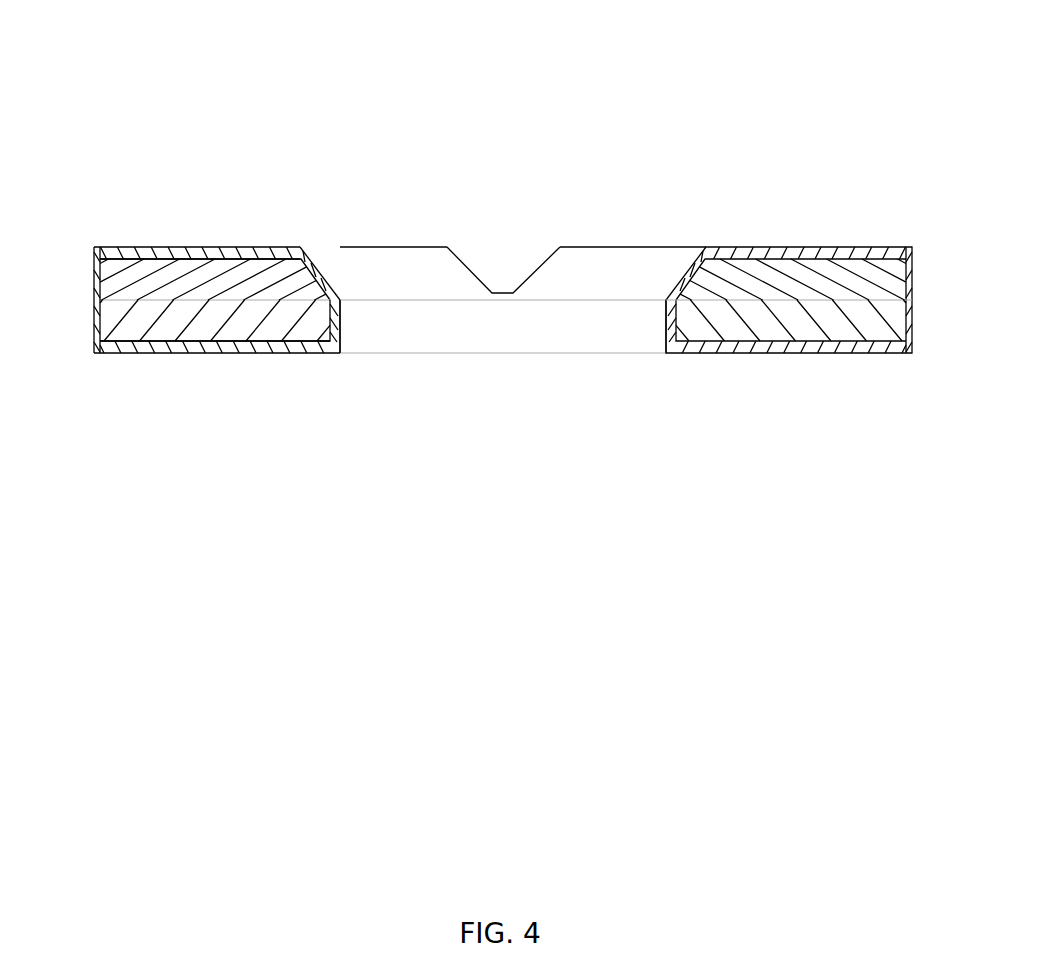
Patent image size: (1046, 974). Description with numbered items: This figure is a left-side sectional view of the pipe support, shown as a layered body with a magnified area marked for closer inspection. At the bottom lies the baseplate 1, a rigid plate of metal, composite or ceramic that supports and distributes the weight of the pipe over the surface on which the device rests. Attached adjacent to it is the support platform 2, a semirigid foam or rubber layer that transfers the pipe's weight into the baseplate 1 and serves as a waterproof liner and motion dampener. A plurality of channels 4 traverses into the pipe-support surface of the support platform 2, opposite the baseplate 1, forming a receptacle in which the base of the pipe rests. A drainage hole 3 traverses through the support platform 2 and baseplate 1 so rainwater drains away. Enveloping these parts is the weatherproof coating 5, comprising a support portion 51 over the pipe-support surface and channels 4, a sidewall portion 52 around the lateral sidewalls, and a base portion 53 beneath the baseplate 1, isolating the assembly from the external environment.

The baseplate 1 is at (92, 302).
The support platform 2 is at (92, 259).
The drainage hole 3 is at (592, 322).
The plurality of channels 4 is at (484, 262).
The weatherproof coating 5 is at (787, 245).
The support portion 51 is at (223, 250).
The sidewall portion 52 is at (100, 268).
The base portion 53 is at (293, 350).